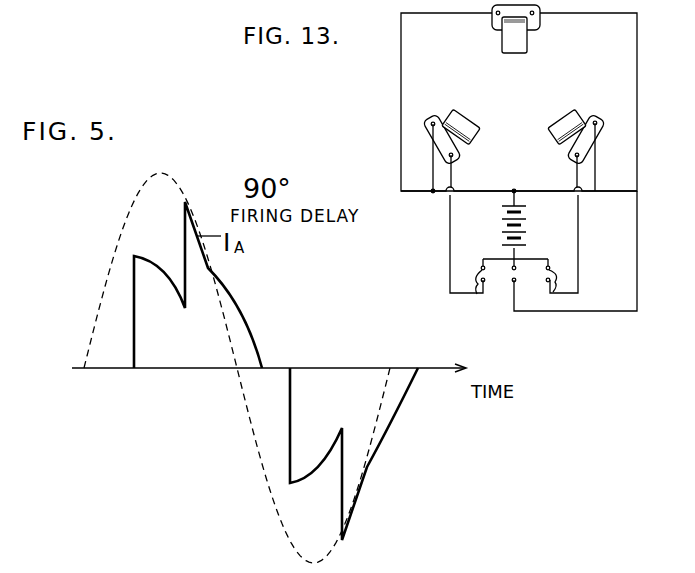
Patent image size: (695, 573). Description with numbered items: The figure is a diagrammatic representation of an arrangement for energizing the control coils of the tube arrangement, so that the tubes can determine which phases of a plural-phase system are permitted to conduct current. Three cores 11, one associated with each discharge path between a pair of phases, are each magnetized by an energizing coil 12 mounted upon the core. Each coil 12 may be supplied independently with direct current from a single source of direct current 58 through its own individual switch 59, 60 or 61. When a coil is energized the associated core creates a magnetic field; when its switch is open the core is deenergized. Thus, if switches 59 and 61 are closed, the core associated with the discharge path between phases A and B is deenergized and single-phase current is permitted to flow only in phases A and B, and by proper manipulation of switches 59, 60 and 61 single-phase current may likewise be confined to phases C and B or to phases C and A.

The core 11 is at (530, 43).
The energizing coil 12 is at (490, 29).
The source of direct current 58 is at (527, 220).
The switch 59 is at (473, 265).
The switch 60 is at (511, 272).
The switch 61 is at (551, 264).